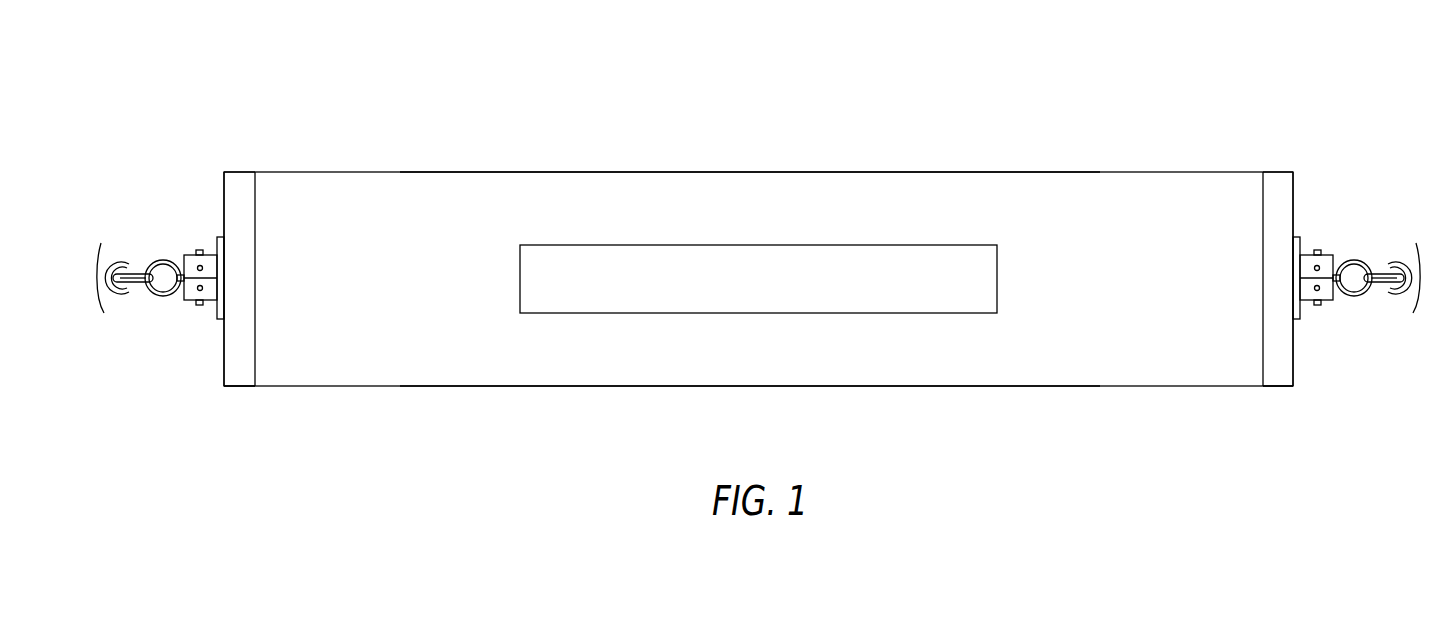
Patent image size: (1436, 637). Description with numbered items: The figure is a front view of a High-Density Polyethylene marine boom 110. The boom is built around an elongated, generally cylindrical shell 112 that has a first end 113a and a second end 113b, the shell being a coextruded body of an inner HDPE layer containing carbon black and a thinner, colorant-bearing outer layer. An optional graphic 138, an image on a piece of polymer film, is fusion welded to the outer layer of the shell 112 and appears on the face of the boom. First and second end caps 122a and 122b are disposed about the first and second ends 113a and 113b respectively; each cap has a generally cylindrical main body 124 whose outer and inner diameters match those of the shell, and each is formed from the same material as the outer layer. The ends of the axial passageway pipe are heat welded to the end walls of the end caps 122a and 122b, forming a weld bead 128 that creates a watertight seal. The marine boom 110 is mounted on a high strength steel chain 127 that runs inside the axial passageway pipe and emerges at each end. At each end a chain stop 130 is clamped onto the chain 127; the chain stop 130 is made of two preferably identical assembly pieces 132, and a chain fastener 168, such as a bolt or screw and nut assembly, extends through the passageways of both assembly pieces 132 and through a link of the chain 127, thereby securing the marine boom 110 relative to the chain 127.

The marine boom 110 is at (887, 90).
The shell 112 is at (1083, 195).
The first end 113a is at (244, 104).
The second end 113b is at (1273, 104).
The first end cap 122a is at (240, 174).
The second end cap 122b is at (1278, 174).
The main body 124 is at (238, 375).
The chain 127 is at (158, 294).
The weld bead 128 is at (220, 320).
The chain stop 130 is at (163, 247).
The assembly piece 132 is at (216, 254).
The graphic 138 is at (660, 265).
The chain fastener 168 is at (199, 251).